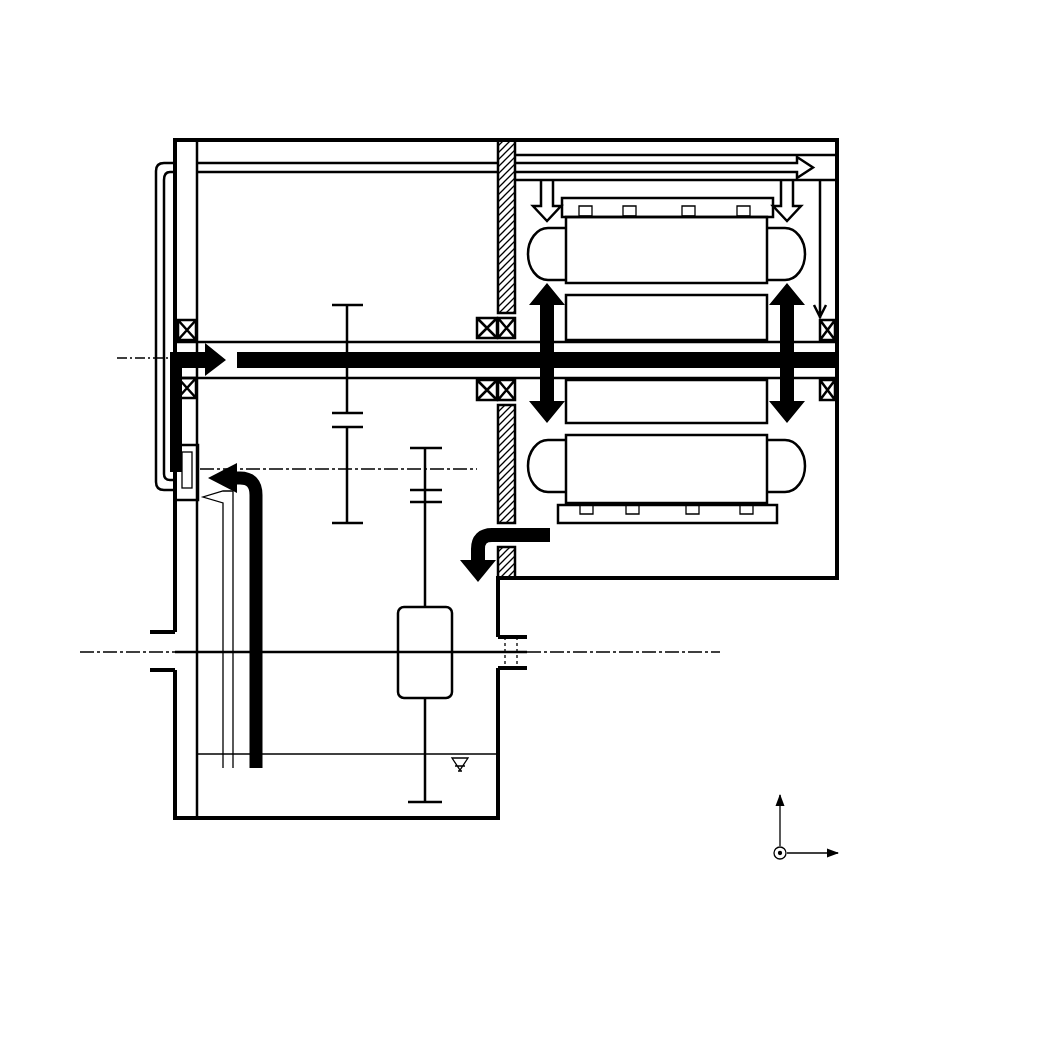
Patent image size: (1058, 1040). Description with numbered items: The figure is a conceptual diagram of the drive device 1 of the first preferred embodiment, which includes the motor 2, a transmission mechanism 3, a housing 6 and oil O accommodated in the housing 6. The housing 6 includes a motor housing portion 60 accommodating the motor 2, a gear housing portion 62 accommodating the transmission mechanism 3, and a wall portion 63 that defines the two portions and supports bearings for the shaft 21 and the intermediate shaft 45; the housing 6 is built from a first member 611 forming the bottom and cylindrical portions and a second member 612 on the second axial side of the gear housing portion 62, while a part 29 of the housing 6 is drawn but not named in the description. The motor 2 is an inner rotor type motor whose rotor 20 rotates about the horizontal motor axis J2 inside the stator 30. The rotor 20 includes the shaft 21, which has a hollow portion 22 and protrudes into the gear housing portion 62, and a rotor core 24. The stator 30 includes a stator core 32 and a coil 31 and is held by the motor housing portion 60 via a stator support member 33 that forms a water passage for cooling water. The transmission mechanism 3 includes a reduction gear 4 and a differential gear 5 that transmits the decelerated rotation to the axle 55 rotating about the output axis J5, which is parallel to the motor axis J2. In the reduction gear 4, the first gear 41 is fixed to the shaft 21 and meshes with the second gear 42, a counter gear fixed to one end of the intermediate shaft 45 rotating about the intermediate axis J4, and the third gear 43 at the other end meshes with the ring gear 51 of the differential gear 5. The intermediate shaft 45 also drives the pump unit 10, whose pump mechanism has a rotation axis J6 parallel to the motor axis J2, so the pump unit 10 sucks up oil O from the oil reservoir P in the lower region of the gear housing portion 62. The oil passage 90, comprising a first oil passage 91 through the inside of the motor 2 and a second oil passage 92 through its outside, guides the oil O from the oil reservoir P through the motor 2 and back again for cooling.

The drive device 1 is at (858, 125).
The motor 2 is at (818, 258).
The transmission mechanism 3 is at (290, 205).
The reduction gear 4 is at (322, 503).
The differential gear 5 is at (388, 672).
The housing 6 is at (862, 232).
The pump unit 10 is at (177, 492).
The rotor 20 is at (798, 412).
The shaft 21 is at (400, 342).
The hollow portion 22 is at (478, 348).
The rotor core 24 is at (790, 418).
The case wall portion 29 is at (183, 140).
The stator 30 is at (822, 477).
The coil 31 is at (795, 478).
The stator core 32 is at (760, 497).
The stator support member 33 is at (730, 523).
The first gear 41 is at (345, 302).
The second gear 42 is at (347, 521).
The third gear 43 is at (411, 491).
The intermediate shaft 45 is at (386, 467).
The ring gear 51 is at (412, 805).
The axle 55 is at (535, 665).
The motor housing portion 60 is at (773, 583).
The gear housing portion 62 is at (375, 830).
The wall portion 63 is at (507, 140).
The first member 611 is at (613, 140).
The second member 612 is at (175, 155).
The oil passage 90 is at (203, 882).
The first oil passage 91 is at (257, 770).
The second oil passage 92 is at (233, 770).
The oil reservoir P is at (193, 800).
The oil O is at (467, 803).
The motor axis J2 is at (836, 355).
The intermediate axis J4 is at (450, 468).
The output axis J5 is at (675, 655).
The rotation axis J6 is at (215, 468).